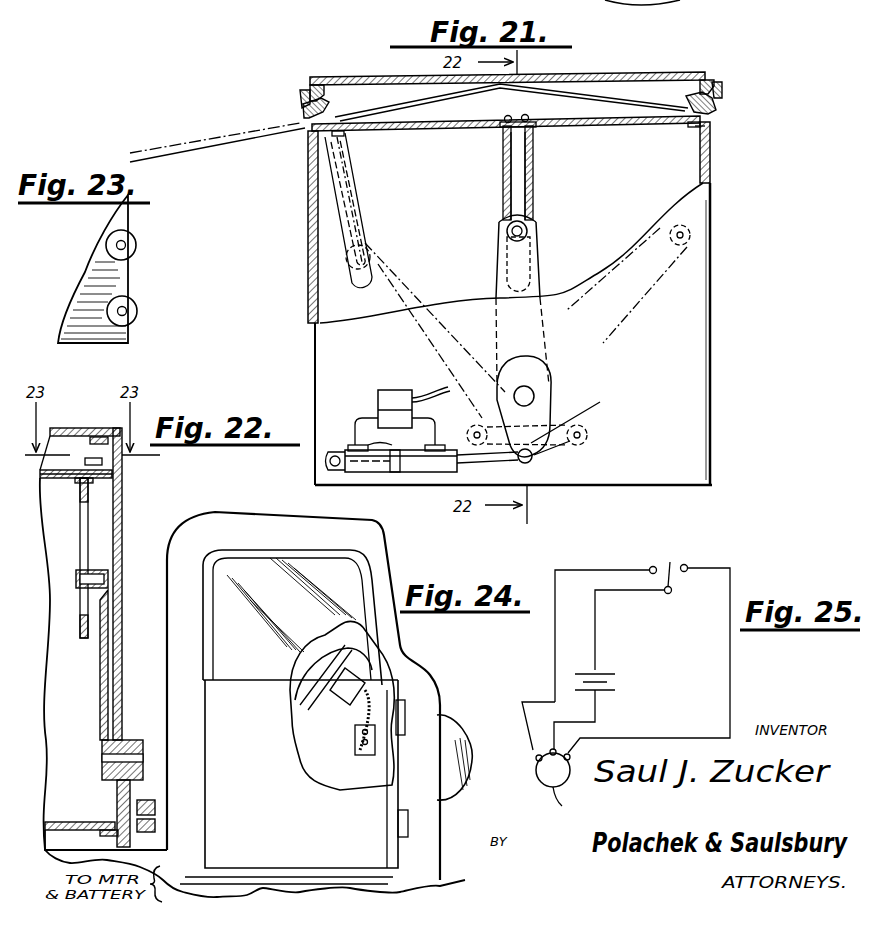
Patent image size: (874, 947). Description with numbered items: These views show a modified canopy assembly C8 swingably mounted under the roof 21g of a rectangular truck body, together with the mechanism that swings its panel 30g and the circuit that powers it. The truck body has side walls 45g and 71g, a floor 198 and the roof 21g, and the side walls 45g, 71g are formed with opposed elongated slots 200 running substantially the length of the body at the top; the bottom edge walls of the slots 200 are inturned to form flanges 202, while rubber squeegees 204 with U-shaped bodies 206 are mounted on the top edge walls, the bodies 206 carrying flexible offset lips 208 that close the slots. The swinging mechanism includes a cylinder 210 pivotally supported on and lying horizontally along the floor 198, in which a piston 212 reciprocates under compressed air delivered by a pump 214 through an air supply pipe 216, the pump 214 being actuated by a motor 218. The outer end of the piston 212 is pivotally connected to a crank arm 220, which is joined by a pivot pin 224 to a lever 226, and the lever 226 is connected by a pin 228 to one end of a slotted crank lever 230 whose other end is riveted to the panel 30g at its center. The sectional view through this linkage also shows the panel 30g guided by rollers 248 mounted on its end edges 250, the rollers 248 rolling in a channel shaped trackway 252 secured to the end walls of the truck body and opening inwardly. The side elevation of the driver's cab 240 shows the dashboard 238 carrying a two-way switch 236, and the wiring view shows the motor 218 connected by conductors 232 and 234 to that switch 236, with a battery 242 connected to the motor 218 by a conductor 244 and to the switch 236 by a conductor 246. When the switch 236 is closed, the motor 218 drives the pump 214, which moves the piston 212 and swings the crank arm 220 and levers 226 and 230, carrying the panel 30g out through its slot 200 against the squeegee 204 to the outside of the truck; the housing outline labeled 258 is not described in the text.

In FIG. 21, the floor 198 is at (602, 486).
In FIG. 21, the elongated slots 200 is at (304, 116).
In FIG. 21, the flanges 202 is at (698, 131).
In FIG. 21, the rubber squeegees 204 is at (300, 96).
In FIG. 21, the U-shaped bodies 206 is at (318, 86).
In FIG. 21, the flexible offset lips 208 is at (338, 117).
In FIG. 21, the cylinder 210 is at (418, 473).
In FIG. 21, the piston 212 is at (494, 467).
In FIG. 22, the piston 212 is at (137, 808).
In FIG. 21, the pump 214 is at (378, 412).
In FIG. 21, the air supply pipe 216 is at (356, 436).
In FIG. 21, the motor 218 is at (392, 390).
In FIG. 25, the motor 218 is at (537, 772).
In FIG. 21, the crank arm 220 is at (562, 424).
In FIG. 22, the crank arm 220 is at (128, 786).
In FIG. 21, the pivot pin 224 is at (548, 386).
In FIG. 22, the pivot pin 224 is at (102, 757).
In FIG. 21, the lever 226 is at (536, 286).
In FIG. 22, the lever 226 is at (110, 645).
In FIG. 21, the pin 228 is at (530, 231).
In FIG. 21, the slotted crank lever 230 is at (502, 190).
In FIG. 22, the slotted crank lever 230 is at (90, 540).
In FIG. 25, the conductor 232 is at (553, 637).
In FIG. 25, the conductor 234 is at (733, 674).
In FIG. 25, the two-way switch 236 is at (672, 560).
In FIG. 24, the dashboard 238 is at (354, 746).
In FIG. 24, the driver's cab 240 is at (380, 566).
In FIG. 25, the battery 242 is at (600, 675).
In FIG. 25, the conductor 244 is at (600, 714).
In FIG. 25, the conductor 246 is at (598, 636).
In FIG. 23, the rollers 248 is at (136, 240).
In FIG. 22, the rollers 248 is at (93, 458).
In FIG. 23, the end edges 250 is at (131, 299).
In FIG. 22, the channel shaped trackway 252 is at (110, 470).
In FIG. 21, the housing 258 is at (714, 282).
In FIG. 21, the roof 21g is at (615, 72).
In FIG. 21, the panel 30g is at (602, 130).
In FIG. 22, the panel 30g is at (57, 482).
In FIG. 21, the side wall 45g is at (307, 236).
In FIG. 21, the side wall 71g is at (711, 196).
In FIG. 21, the canopy assembly C8 is at (430, 140).